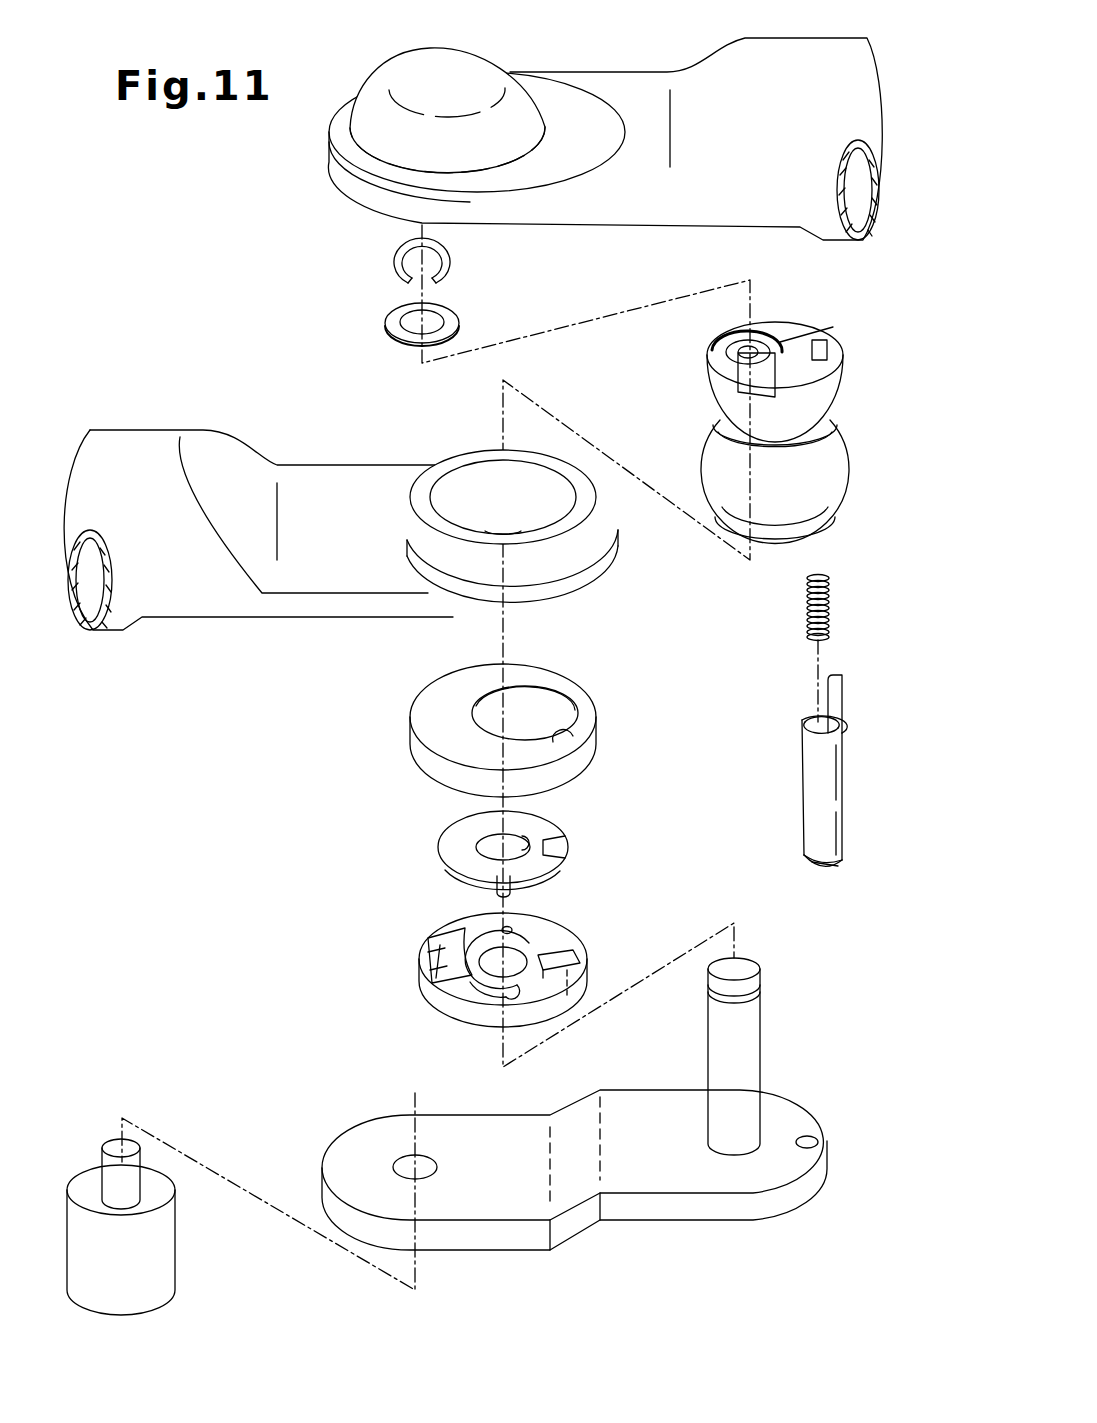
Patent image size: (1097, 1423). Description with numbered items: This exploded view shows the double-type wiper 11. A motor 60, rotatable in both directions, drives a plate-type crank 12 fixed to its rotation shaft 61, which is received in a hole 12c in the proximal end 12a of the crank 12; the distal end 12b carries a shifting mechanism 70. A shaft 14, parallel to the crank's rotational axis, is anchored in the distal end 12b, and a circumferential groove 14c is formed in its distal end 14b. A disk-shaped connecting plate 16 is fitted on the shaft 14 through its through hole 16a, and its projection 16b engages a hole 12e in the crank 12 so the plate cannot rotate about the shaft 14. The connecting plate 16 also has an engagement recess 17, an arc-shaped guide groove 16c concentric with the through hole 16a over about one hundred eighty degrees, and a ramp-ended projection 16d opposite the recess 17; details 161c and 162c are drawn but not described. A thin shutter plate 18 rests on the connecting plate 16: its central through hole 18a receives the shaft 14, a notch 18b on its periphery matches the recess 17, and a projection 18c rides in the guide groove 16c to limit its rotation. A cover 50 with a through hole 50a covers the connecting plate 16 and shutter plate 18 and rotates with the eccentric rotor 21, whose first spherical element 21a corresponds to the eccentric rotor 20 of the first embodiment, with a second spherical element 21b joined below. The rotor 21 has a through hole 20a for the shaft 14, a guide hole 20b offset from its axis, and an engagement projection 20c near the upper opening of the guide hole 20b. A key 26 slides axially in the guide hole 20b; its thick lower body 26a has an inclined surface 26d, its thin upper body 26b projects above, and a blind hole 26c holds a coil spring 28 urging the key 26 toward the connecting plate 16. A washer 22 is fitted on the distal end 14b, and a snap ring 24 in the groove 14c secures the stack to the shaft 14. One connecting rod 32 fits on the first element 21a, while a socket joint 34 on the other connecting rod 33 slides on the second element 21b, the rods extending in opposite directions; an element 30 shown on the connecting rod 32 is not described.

The double-type wiper 11 is at (331, 275).
The plate-type crank 12 is at (564, 1178).
The proximal end of the crank 12a is at (350, 1148).
The distal end of the crank 12b is at (768, 1178).
The hole 12c is at (427, 1163).
The hole 12e is at (807, 1138).
The shaft 14 is at (727, 1036).
The distal end of the shaft 14b is at (745, 965).
The groove 14c is at (733, 995).
The connecting plate 16 is at (509, 977).
The through hole 16a is at (523, 960).
The projection 16b is at (577, 992).
The guide groove 16c is at (470, 943).
The projection 16d is at (432, 962).
The ridge end 161c is at (503, 993).
The cam disc hole 162c is at (510, 930).
The engagement recess 17 is at (583, 952).
The shutter plate 18 is at (515, 850).
The through hole 18a is at (527, 842).
The washer plate notch 18b is at (563, 848).
The projection 18c is at (493, 887).
The eccentric rotor 20 is at (737, 349).
The through hole 20a is at (710, 355).
The guide hole 20b is at (817, 340).
The engagement projection 20c is at (770, 375).
The eccentric rotor 21 is at (769, 449).
The first spherical element 21a is at (837, 388).
The second spherical element 21b is at (830, 483).
The washer 22 is at (457, 318).
The snap ring 24 is at (452, 253).
The key 26 is at (811, 796).
The lower body 26a is at (843, 768).
The upper body 26b is at (833, 707).
The blind hole 26c is at (810, 720).
The inclined surface 26d is at (823, 862).
The elastic member 28 is at (830, 603).
The dome cover 30 is at (467, 57).
The connecting rod 32 is at (835, 47).
The connecting rod 33 is at (140, 440).
The joint 34 is at (460, 460).
The cover 50 is at (504, 730).
The through hole 50a is at (578, 737).
The motor 60 is at (145, 1219).
The rotation shaft 61 is at (107, 1162).
The shifting mechanism 70 is at (342, 733).